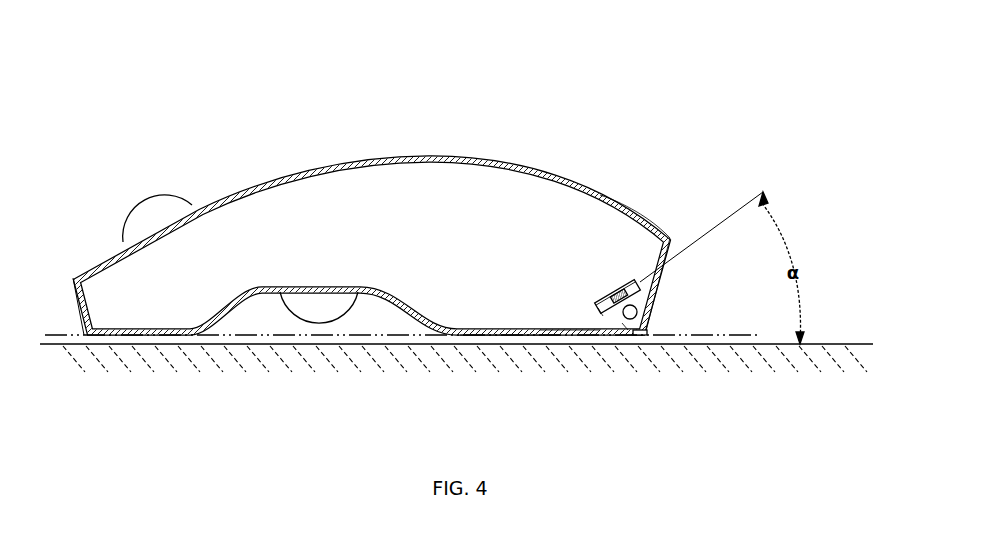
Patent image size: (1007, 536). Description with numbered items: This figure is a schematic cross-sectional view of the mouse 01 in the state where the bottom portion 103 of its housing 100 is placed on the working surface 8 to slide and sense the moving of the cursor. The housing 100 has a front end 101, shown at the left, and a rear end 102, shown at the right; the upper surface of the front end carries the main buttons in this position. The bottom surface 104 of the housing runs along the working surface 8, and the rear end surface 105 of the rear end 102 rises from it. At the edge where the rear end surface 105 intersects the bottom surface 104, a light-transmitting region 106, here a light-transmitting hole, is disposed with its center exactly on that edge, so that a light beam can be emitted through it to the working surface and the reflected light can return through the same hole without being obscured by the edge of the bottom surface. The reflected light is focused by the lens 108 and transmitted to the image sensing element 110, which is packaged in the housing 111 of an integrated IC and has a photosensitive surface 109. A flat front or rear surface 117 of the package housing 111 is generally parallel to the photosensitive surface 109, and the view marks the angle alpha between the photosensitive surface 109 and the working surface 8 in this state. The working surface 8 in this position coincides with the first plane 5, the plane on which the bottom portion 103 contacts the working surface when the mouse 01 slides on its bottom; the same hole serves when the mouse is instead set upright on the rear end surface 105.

The mouse 01 is at (390, 230).
The housing 100 is at (582, 184).
The front end 101 is at (95, 266).
The rear end 102 is at (648, 221).
The bottom portion 103 is at (525, 338).
The bottom surface 104 is at (556, 338).
The rear end surface 105 is at (659, 295).
The light-transmitting region 106 is at (645, 338).
The lens 108 is at (638, 313).
The photosensitive surface 109 is at (622, 322).
The image sensing element 110 is at (611, 297).
The package housing of the integrated IC 111 is at (604, 310).
The flat front or rear surface of the package housing 117 is at (620, 290).
The first plane 5 is at (723, 335).
The working surface 8 is at (822, 344).